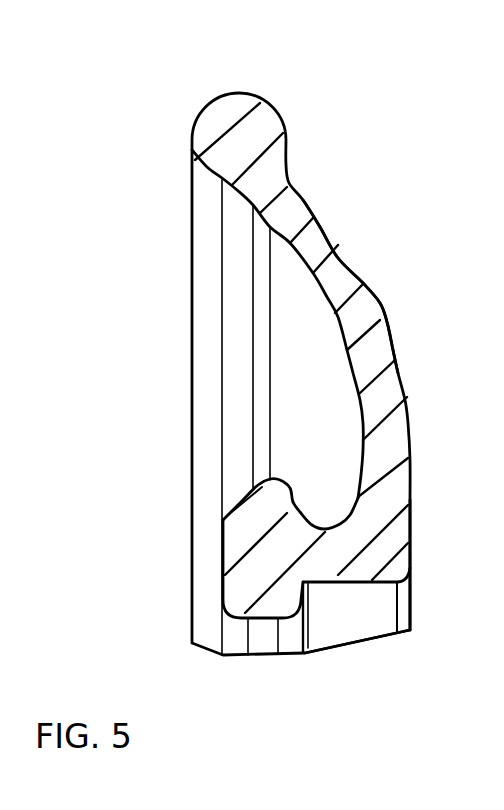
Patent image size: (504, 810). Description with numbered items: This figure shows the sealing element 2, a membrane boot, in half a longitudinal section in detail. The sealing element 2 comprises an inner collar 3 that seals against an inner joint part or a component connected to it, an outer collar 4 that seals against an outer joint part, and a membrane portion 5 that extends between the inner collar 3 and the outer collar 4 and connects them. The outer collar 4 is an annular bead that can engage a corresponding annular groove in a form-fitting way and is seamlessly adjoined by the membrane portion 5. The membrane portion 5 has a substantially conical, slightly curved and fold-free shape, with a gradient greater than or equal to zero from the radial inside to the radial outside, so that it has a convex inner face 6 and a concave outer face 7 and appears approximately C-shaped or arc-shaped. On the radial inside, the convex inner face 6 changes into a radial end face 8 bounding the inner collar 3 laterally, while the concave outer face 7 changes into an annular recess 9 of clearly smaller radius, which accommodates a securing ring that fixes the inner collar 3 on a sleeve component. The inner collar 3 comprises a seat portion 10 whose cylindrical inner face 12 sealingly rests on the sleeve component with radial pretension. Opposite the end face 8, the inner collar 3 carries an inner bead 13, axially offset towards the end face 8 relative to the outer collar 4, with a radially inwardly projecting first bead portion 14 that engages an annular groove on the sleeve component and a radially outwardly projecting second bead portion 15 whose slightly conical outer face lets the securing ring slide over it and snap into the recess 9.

The sealing element 2 is at (393, 108).
The inner collar 3 is at (313, 618).
The outer collar 4 is at (242, 113).
The membrane portion 5 is at (382, 303).
The convex inner face 6 is at (393, 343).
The concave outer face 7 is at (352, 372).
The radial end face 8 is at (410, 545).
The annular recess 9 is at (325, 528).
The seat portion 10 is at (348, 588).
The inner face 12 is at (412, 592).
The inner bead 13 is at (252, 563).
The first bead portion 14 is at (258, 612).
The second bead portion 15 is at (248, 487).